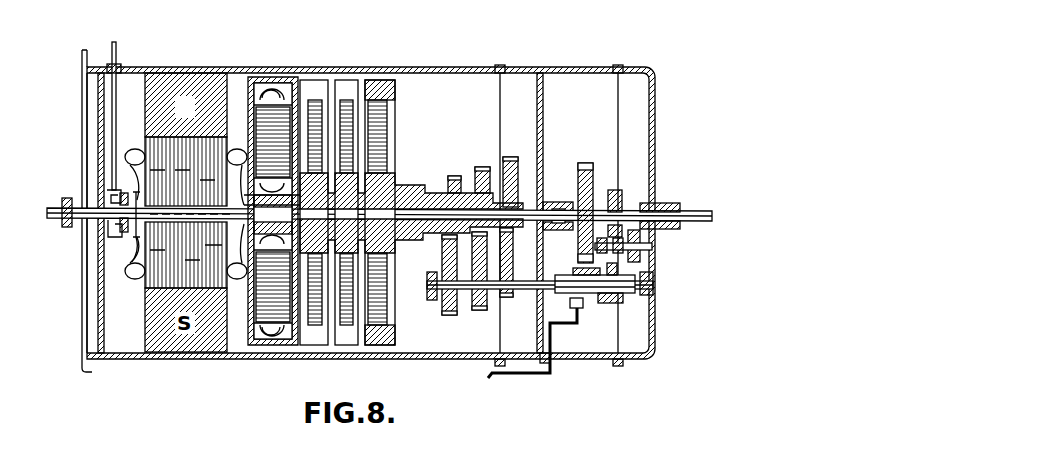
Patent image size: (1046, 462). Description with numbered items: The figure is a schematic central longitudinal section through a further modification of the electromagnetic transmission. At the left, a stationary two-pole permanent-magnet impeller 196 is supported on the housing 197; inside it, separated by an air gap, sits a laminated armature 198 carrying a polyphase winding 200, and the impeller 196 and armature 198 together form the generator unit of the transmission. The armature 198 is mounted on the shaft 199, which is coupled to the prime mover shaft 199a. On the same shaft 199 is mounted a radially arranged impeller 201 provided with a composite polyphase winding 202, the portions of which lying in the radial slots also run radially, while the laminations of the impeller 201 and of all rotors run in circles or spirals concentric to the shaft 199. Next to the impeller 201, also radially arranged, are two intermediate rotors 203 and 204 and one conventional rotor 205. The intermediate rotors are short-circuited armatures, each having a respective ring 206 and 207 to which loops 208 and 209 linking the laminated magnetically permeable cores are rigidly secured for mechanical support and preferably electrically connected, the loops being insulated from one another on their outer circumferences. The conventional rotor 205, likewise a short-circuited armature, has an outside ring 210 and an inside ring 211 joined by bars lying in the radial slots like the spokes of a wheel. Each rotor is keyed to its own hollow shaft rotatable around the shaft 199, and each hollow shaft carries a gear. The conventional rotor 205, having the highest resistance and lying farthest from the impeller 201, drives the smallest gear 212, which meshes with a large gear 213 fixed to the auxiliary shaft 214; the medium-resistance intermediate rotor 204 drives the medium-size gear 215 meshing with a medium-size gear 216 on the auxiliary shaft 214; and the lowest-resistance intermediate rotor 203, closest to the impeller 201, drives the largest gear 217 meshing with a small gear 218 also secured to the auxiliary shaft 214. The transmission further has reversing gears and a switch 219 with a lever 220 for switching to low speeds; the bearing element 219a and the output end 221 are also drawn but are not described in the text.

The permanent-magnet impeller 196 is at (186, 72).
The housing 197 is at (242, 72).
The laminated armature 198 is at (142, 283).
The shaft 199 is at (78, 220).
The prime mover shaft 199a is at (52, 208).
The polyphase winding 200 is at (182, 247).
The impeller 201 is at (263, 297).
The composite polyphase winding 202 is at (272, 337).
The intermediate rotor 203 is at (318, 83).
The intermediate rotor 204 is at (350, 337).
The conventional rotor 205 is at (383, 108).
The ring 206 is at (330, 158).
The ring 207 is at (353, 185).
The loops 208 is at (303, 115).
The loops 209 is at (340, 302).
The outside ring 210 is at (374, 86).
The inside ring 211 is at (385, 247).
The smallest gear 212 is at (453, 175).
The large gear 213 is at (448, 318).
The auxiliary shaft 214 is at (655, 278).
The medium-size gear 215 is at (482, 167).
The medium-size gear 216 is at (478, 300).
The largest gear 217 is at (515, 158).
The small gear 218 is at (507, 303).
The switch 219 is at (136, 230).
The bearing 219a is at (115, 240).
The lever 220 is at (112, 48).
The output shaft bearing 221 is at (707, 202).